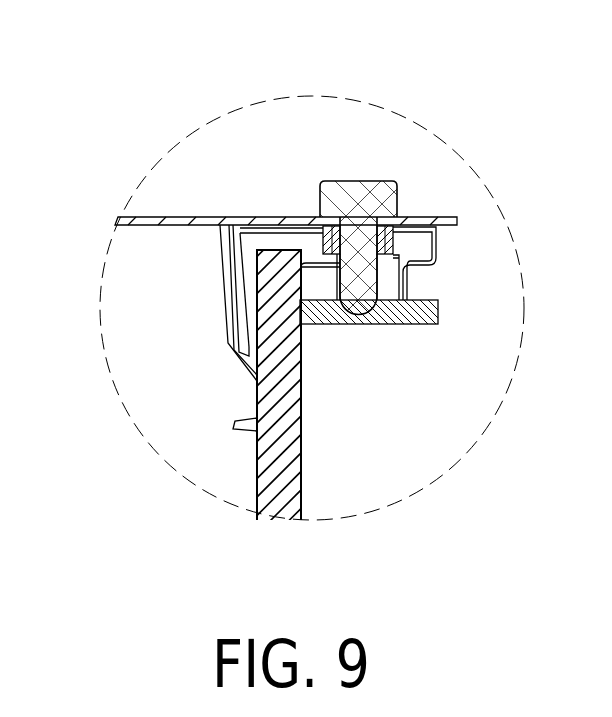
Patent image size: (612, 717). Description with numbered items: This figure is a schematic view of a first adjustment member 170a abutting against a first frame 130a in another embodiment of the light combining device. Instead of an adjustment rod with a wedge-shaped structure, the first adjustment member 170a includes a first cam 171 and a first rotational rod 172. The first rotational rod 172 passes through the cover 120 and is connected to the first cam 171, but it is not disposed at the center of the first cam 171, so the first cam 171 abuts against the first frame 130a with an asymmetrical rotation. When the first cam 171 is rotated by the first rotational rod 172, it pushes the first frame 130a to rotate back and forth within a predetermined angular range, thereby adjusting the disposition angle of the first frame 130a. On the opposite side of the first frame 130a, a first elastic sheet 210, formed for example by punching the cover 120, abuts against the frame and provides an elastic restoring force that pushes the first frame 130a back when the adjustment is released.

The cover 120 is at (162, 217).
The first frame 130a is at (272, 521).
The first adjustment member 170a is at (488, 55).
The first cam 171 is at (417, 300).
The first rotational rod 172 is at (363, 195).
The first elastic sheet 210 is at (227, 292).